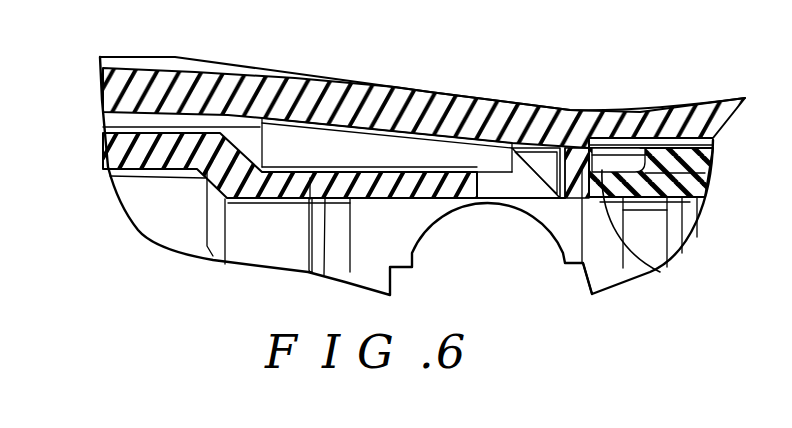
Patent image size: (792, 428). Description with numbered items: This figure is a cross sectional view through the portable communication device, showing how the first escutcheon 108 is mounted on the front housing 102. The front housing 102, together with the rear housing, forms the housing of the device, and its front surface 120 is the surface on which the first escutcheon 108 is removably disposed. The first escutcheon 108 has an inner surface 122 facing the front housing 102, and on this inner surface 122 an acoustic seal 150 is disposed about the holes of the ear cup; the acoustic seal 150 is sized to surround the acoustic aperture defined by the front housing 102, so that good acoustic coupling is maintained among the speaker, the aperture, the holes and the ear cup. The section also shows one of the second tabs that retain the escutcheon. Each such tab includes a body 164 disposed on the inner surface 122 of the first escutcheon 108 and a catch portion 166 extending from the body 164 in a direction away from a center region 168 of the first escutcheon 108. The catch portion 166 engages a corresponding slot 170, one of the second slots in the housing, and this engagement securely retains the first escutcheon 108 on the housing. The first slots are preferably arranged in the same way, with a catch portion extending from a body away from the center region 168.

The front housing 102 is at (137, 150).
The first escutcheon 108 is at (622, 122).
The front surface 120 is at (433, 170).
The inner surface 122 is at (488, 168).
The acoustic seal 150 is at (316, 145).
The body 164 is at (570, 167).
The catch portion 166 is at (590, 272).
The center region 168 is at (205, 60).
The slot 170 is at (660, 272).